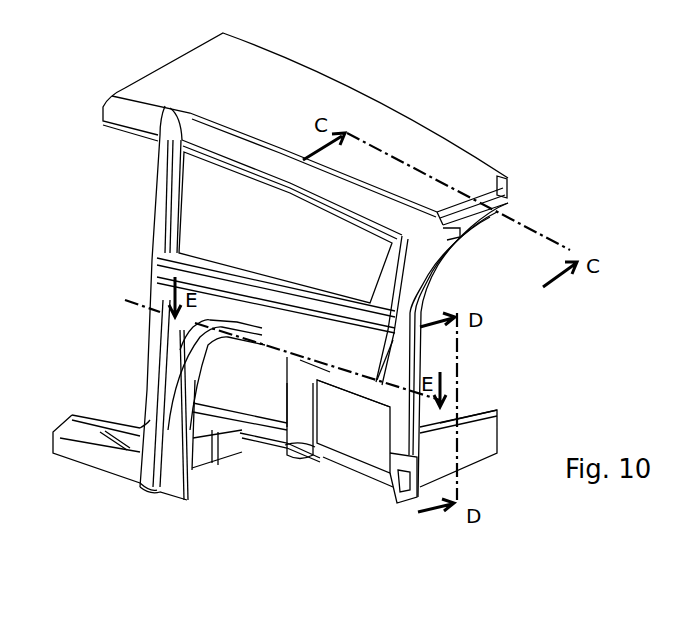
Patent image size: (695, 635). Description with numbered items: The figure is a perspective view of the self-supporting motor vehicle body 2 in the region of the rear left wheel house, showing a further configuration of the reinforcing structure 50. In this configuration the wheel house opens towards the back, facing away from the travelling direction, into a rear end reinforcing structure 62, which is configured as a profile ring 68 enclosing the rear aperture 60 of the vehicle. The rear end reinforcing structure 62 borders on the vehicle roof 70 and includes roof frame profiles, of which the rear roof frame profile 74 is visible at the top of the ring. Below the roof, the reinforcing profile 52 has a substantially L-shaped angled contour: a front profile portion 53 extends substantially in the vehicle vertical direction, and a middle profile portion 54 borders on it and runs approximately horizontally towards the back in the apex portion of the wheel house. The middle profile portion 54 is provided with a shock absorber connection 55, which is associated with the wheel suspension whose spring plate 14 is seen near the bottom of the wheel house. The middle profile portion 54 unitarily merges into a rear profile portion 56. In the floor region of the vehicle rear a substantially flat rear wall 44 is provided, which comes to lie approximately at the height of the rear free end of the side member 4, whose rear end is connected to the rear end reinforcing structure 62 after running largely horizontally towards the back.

The motor vehicle body 2 is at (322, 85).
The side member 4 is at (370, 475).
The spring plate 14 is at (284, 463).
The rear wall 44 is at (488, 442).
The reinforcing structure 50 is at (226, 494).
The reinforcing profile 52 is at (316, 452).
The front profile portion 53 is at (287, 393).
The middle profile portion 54 is at (328, 362).
The shock absorber connection 55 is at (335, 388).
The rear profile portion 56 is at (372, 392).
The rear aperture 60 is at (510, 344).
The rear end reinforcing structure 62 is at (545, 155).
The profile ring 68 is at (537, 201).
The vehicle roof 70 is at (432, 150).
The rear roof frame profile 74 is at (493, 180).